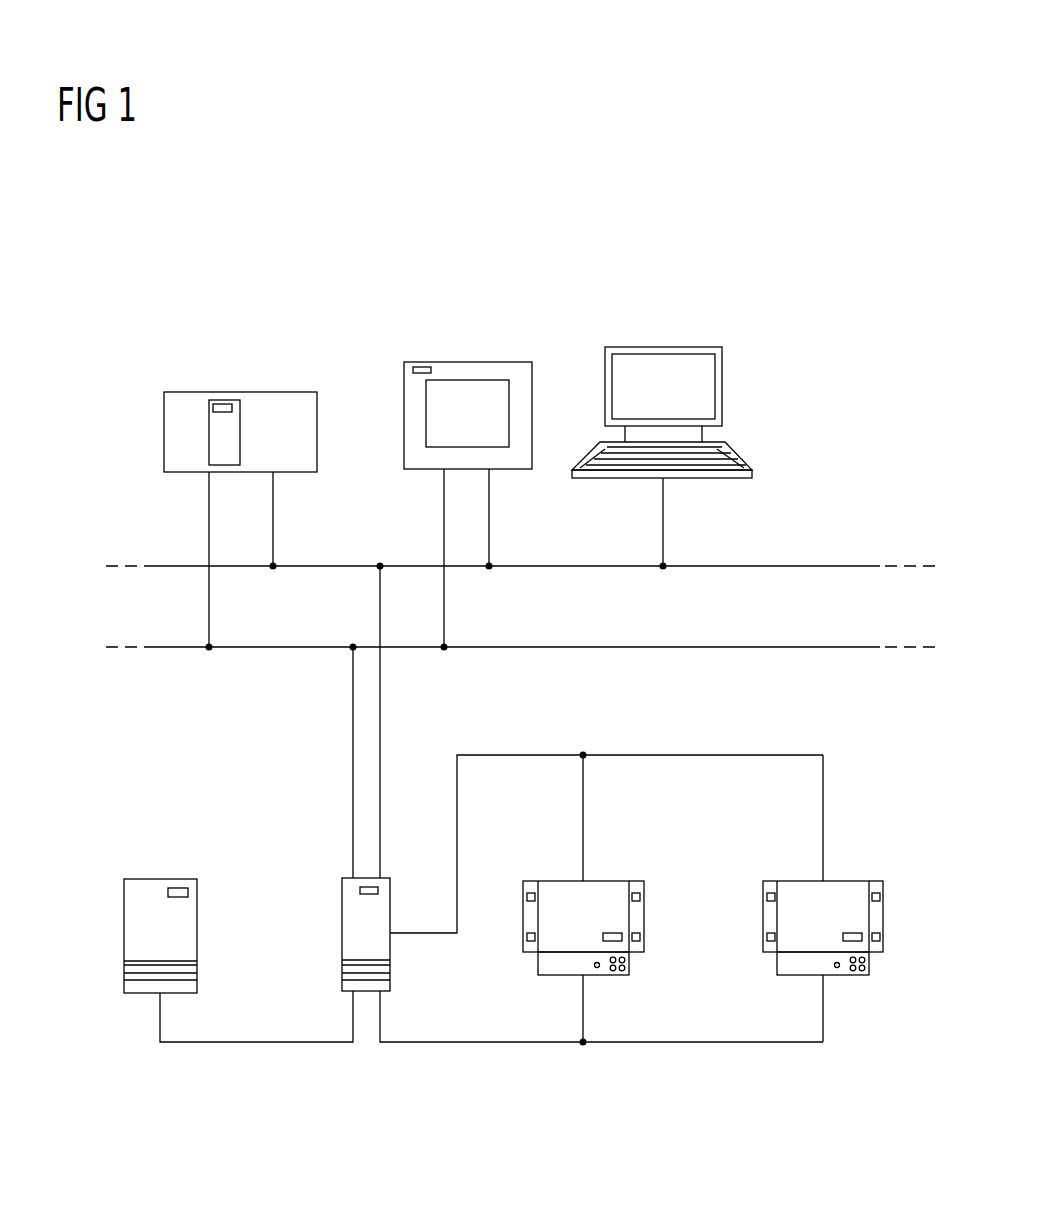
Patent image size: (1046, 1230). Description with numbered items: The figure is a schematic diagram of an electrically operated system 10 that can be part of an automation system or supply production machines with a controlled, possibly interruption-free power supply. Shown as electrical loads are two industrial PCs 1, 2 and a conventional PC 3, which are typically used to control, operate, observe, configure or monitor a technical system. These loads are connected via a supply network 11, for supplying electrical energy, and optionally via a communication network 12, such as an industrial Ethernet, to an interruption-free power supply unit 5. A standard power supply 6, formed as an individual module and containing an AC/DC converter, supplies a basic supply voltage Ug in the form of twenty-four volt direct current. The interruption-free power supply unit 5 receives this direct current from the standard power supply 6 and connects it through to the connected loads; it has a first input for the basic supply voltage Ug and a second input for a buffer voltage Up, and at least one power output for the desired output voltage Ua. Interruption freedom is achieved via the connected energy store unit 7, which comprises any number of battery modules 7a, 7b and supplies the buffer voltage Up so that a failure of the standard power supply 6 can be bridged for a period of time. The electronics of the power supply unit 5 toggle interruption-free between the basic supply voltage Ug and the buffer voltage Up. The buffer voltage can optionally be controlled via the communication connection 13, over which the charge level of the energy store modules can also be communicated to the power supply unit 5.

The industrial PC 1 is at (245, 392).
The industrial PC 2 is at (463, 362).
The conventional PC 3 is at (661, 347).
The interruption-free power supply unit 5 is at (342, 928).
The standard power supply 6 is at (155, 879).
The energy store unit 7 is at (888, 1068).
The battery module 7a is at (560, 881).
The battery module 7b is at (793, 881).
The electrically operated system 10 is at (784, 263).
The supply network 11 is at (840, 650).
The communication network 12 is at (839, 566).
The communication connection 13 is at (510, 755).
The output voltage Ua is at (353, 710).
The basic supply voltage Ug is at (262, 1042).
The buffer voltage Up is at (477, 1042).